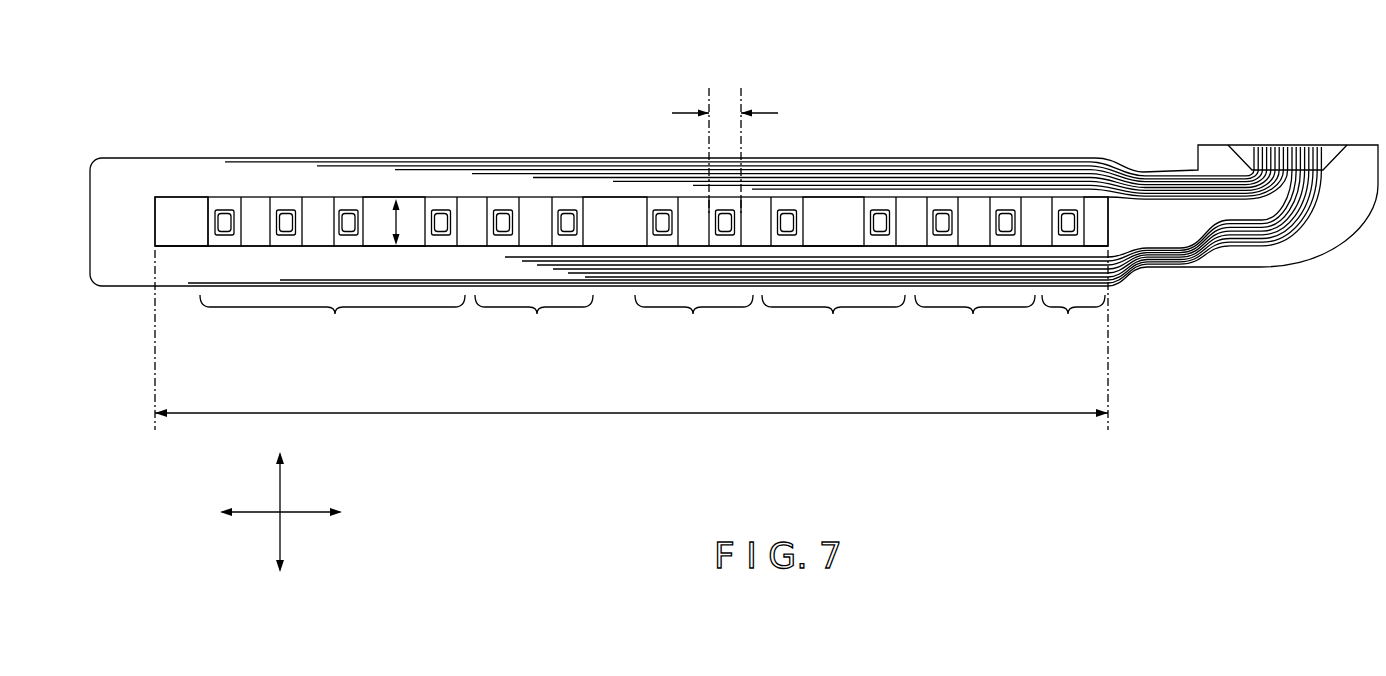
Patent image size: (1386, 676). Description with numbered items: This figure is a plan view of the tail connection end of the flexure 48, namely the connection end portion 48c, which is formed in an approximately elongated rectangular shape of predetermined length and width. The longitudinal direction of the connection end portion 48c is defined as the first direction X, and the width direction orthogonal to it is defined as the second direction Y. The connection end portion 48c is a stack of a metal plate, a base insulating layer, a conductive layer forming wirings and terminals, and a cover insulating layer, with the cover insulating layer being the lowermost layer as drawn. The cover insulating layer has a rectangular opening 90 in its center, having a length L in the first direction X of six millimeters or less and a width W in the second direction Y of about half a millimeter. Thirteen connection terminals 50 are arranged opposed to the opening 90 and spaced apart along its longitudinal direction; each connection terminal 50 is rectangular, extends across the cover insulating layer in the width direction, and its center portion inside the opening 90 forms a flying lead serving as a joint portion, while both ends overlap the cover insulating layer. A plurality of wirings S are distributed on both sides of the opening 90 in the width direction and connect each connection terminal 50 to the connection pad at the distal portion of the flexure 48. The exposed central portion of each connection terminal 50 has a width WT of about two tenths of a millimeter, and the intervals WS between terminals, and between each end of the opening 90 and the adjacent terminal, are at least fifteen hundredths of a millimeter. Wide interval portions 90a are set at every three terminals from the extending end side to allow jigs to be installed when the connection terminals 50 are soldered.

The flexure 48 is at (1345, 200).
The connection end portion 48c is at (590, 113).
The connection terminal 50 is at (205, 218).
The opening 90 is at (177, 252).
The wide interval portion 90a is at (382, 205).
The interval WS is at (178, 218).
The width W is at (404, 222).
The width WT is at (725, 148).
The wirings S is at (837, 173).
The length L is at (631, 340).
The first direction X is at (290, 514).
The second direction Y is at (280, 526).